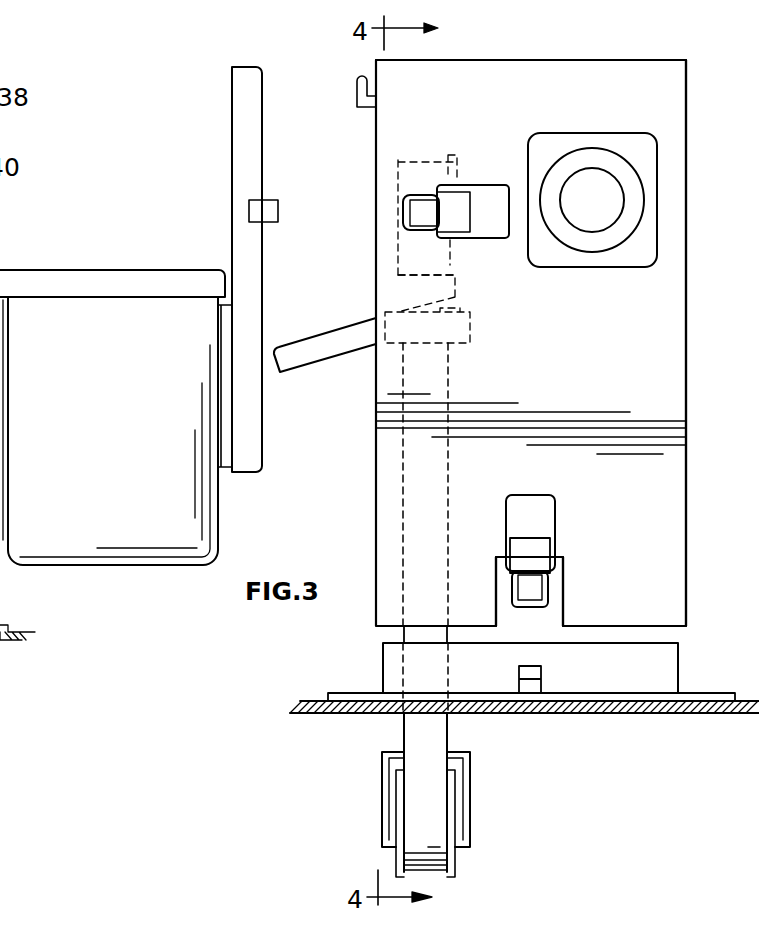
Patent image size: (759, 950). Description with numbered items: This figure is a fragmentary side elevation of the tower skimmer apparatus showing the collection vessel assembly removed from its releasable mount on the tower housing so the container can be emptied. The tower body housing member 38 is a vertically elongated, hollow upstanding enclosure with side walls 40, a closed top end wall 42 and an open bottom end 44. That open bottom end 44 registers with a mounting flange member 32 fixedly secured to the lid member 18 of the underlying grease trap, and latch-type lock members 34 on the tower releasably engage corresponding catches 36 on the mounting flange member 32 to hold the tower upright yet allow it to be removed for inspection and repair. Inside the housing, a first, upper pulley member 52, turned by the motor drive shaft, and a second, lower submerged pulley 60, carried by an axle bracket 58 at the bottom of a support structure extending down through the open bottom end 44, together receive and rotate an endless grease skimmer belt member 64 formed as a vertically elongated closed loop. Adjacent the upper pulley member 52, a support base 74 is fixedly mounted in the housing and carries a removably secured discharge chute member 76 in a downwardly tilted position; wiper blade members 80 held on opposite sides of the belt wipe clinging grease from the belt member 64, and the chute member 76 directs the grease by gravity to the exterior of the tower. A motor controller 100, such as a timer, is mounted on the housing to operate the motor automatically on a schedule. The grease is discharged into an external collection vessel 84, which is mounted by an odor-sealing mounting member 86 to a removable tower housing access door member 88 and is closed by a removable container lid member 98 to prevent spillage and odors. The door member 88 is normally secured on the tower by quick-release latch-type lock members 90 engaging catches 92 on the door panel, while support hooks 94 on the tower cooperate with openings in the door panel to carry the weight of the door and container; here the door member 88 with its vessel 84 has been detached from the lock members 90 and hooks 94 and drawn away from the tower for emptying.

The lid member 18 is at (317, 693).
The mounting flange member 32 is at (679, 666).
The latch-type lock member 34 is at (556, 523).
The catch 36 is at (541, 672).
The tower body housing member 38 is at (687, 95).
The side walls 40 is at (660, 302).
The closed top end wall 42 is at (620, 62).
The open bottom end 44 is at (641, 627).
The first, upper pulley member 52 is at (419, 152).
The axle bracket 58 is at (470, 776).
The second, lower submerged pulley 60 is at (455, 860).
The endless grease skimmer belt member 64 is at (404, 732).
The support base 74 is at (470, 327).
The discharge chute member 76 is at (325, 322).
The wiper blade member 80 is at (455, 280).
The collection vessel 84 is at (118, 568).
The odor-sealing mounting member 86 is at (226, 470).
The tower housing access door member 88 is at (232, 140).
The latch-type lock member 90 is at (487, 185).
The catch 92 is at (278, 212).
The support hook 94 is at (357, 96).
The container lid member 98 is at (118, 270).
The motor controller 100 is at (594, 150).